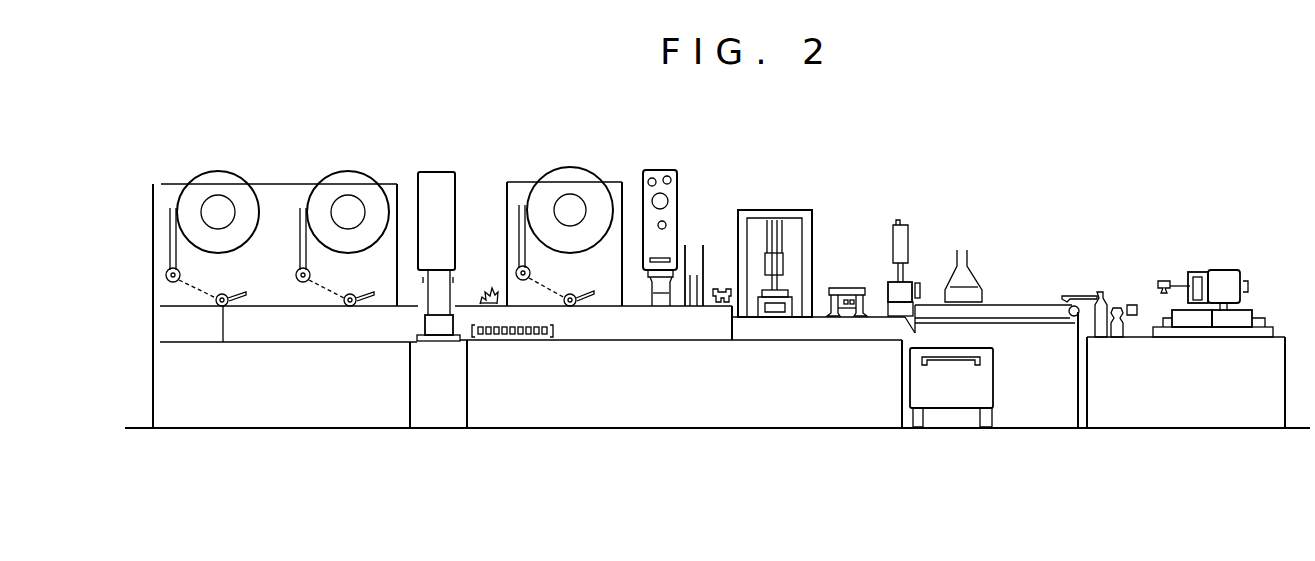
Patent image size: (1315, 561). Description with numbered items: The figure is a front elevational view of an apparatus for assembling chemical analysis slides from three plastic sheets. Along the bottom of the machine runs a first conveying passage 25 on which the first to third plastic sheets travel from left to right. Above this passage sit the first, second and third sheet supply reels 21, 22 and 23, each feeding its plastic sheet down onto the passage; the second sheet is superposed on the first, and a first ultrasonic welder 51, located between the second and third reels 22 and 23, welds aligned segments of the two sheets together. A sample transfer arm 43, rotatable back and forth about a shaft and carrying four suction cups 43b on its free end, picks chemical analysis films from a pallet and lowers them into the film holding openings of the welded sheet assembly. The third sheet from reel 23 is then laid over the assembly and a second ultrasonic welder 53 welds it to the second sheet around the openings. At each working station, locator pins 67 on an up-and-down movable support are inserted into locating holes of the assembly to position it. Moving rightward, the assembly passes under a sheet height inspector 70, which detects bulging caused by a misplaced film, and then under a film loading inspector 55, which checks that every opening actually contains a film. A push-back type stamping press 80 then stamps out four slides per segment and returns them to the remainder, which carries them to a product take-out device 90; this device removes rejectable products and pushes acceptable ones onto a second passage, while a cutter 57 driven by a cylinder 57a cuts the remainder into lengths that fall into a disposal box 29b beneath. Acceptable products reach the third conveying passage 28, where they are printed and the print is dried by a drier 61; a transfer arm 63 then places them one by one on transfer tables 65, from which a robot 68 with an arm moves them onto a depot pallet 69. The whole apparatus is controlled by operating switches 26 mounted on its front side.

The first sheet supply reel 21 is at (228, 180).
The second sheet supply reel 22 is at (346, 176).
The third sheet supply reel 23 is at (567, 176).
The first conveying passage 25 is at (304, 340).
The operating switches 26 is at (508, 338).
The third conveying passage 28 is at (1024, 302).
The cabinet 29b is at (998, 387).
The sample transfer arm 43 is at (483, 287).
The suction cups 43b is at (476, 314).
The first ultrasonic welder 51 is at (437, 170).
The second ultrasonic welder 53 is at (662, 170).
The film loading inspector 55 is at (721, 288).
The cutter 57 is at (920, 284).
The cylinder 57a is at (912, 238).
The drier 61 is at (968, 282).
The transfer arm 63 is at (1080, 296).
The transfer tables 65 is at (1132, 304).
The locator pins 67 is at (1222, 271).
The robot 68 is at (1167, 280).
The depot pallet 69 is at (1253, 311).
The sheet height inspector 70 is at (689, 248).
The stamping press 80 is at (788, 210).
The product take-out device 90 is at (845, 286).